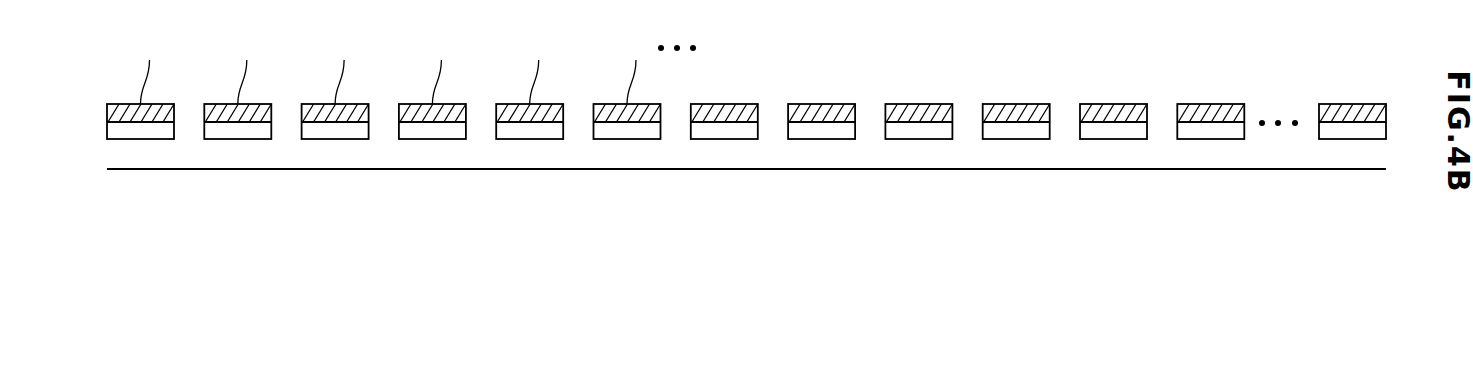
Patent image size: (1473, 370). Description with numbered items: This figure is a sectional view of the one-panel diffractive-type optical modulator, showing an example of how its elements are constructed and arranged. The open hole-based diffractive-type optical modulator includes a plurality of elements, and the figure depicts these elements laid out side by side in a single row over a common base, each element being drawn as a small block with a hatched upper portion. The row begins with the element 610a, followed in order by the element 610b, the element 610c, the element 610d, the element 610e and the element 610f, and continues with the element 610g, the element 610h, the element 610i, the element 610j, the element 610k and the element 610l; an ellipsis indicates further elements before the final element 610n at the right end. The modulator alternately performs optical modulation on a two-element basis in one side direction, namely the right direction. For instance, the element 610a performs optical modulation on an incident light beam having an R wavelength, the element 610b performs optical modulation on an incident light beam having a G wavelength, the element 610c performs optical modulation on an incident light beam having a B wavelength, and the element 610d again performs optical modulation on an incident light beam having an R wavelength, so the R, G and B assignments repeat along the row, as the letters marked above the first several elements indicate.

The element 610a is at (140, 139).
The element 610b is at (238, 139).
The element 610c is at (335, 139).
The element 610d is at (432, 139).
The element 610e is at (530, 139).
The element 610f is at (627, 139).
The element 610g is at (724, 139).
The element 610h is at (822, 139).
The element 610i is at (919, 139).
The element 610j is at (1016, 139).
The element 610k is at (1114, 139).
The element 610l is at (1211, 139).
The element 610n is at (1352, 139).